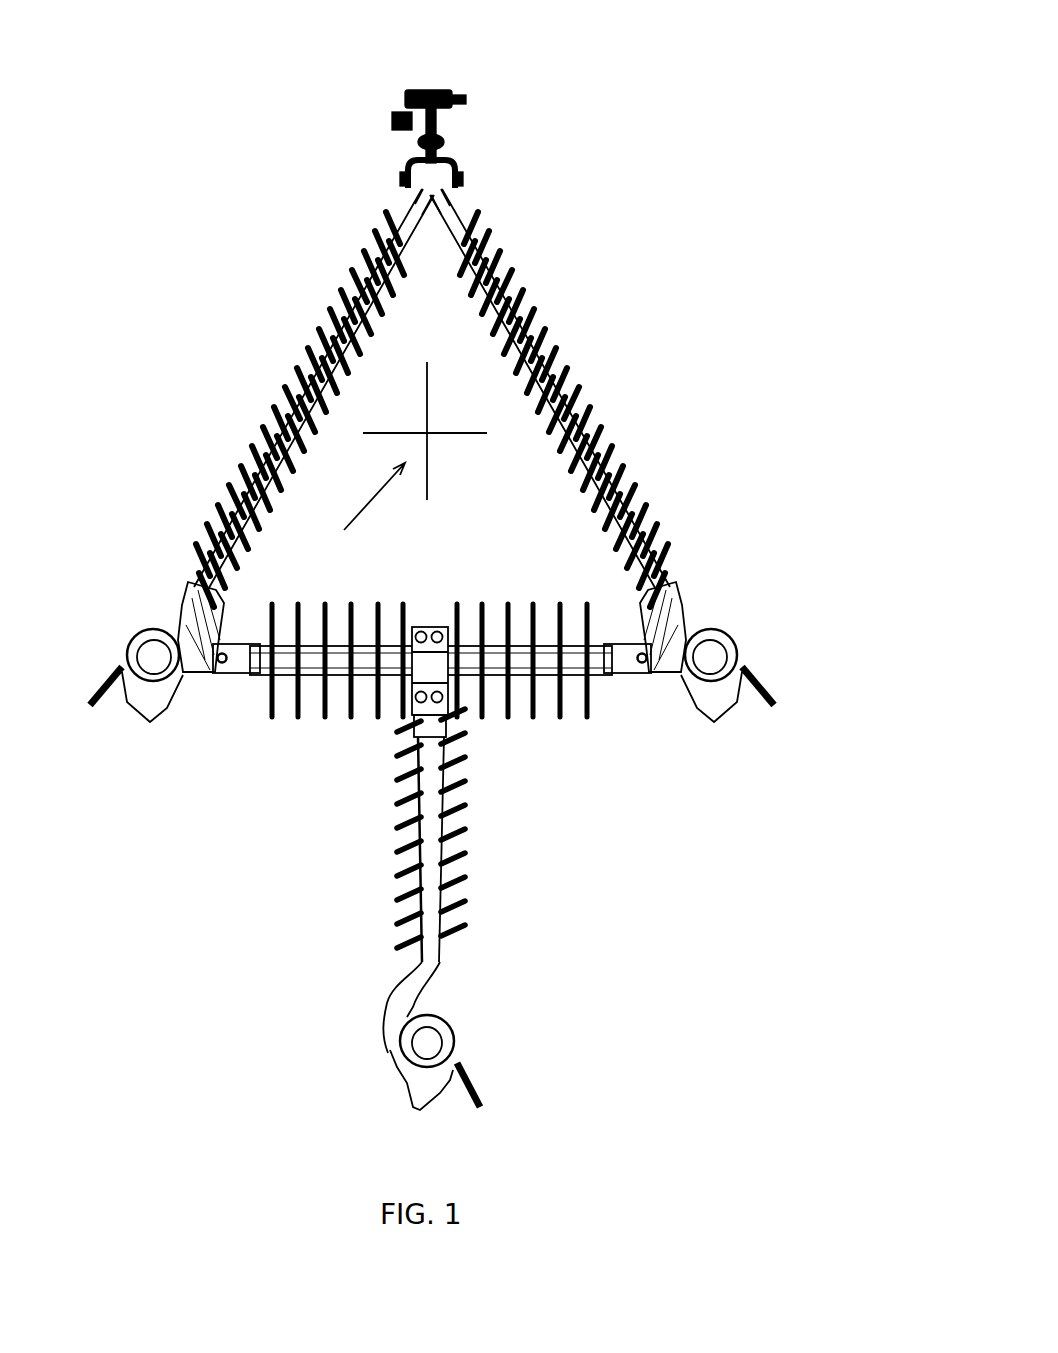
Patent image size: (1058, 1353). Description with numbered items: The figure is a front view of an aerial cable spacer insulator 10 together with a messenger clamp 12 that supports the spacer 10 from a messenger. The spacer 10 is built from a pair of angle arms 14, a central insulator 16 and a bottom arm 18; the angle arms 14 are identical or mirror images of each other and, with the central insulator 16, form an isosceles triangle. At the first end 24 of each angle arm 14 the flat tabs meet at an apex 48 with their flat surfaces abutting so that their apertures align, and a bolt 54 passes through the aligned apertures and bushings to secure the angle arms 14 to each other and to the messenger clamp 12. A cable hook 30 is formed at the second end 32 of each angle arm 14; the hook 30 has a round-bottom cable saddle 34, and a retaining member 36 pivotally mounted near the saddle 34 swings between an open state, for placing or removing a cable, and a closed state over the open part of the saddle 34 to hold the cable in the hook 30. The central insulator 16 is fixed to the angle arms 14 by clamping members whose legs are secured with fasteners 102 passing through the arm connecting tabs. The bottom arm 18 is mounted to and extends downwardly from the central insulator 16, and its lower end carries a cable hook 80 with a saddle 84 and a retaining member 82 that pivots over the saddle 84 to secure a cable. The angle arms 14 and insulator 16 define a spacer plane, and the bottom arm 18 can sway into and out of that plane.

The aerial cable spacer insulator 10 is at (587, 345).
The messenger clamp 12 is at (480, 120).
The angle arms 14 is at (355, 305).
The central insulator 16 is at (565, 680).
The bottom arm 18 is at (443, 876).
The first end 24 is at (477, 215).
The cable hook 30 is at (723, 707).
The second end 32 is at (698, 601).
The cable saddle 34 is at (711, 680).
The retaining member 36 is at (760, 693).
The apex 48 is at (418, 182).
The bolt 54 is at (471, 179).
The cable hook 80 is at (445, 1088).
The retaining member 82 is at (483, 1090).
The saddle 84 is at (428, 1057).
The fastener 102 is at (222, 664).